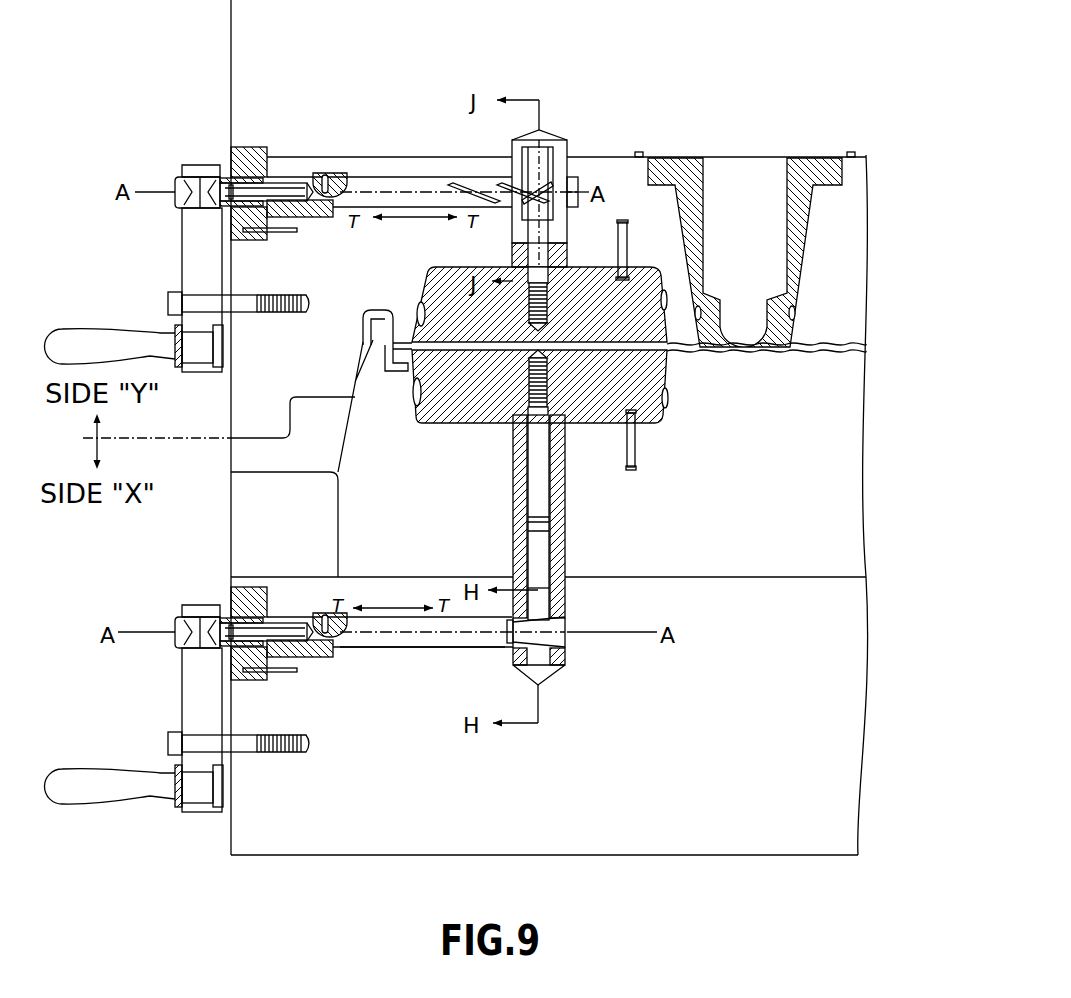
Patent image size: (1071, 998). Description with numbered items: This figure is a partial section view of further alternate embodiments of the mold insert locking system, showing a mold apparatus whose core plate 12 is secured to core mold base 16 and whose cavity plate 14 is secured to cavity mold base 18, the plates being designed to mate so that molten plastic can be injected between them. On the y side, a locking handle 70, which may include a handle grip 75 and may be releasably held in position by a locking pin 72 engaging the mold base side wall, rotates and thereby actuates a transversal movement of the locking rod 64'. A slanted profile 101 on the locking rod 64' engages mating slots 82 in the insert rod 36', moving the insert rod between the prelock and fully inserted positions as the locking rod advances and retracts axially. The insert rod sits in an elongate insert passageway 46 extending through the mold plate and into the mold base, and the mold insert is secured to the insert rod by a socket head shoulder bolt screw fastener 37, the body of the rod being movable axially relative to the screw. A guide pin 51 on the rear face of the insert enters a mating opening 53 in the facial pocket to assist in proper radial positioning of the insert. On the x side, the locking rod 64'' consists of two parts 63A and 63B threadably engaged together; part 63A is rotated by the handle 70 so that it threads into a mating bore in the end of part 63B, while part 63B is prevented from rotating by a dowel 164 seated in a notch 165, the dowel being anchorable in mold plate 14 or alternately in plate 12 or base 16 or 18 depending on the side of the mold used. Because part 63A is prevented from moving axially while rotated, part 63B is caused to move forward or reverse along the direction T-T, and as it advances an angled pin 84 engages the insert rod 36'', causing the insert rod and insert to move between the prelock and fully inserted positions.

The core plate 12 is at (330, 482).
The cavity plate 14 is at (258, 385).
The core mold base 16 is at (270, 833).
The cavity mold base 18 is at (242, 32).
The insert rod 36' is at (590, 176).
The insert rod 36'' is at (584, 550).
The socket head shoulder bolt screw fastener 37 is at (547, 155).
The elongate insert passageway 46 is at (510, 153).
The guide pin 51 is at (624, 258).
The mating opening 53 is at (624, 258).
The part of locking rod 63A is at (300, 657).
The part of locking rod 63B is at (388, 640).
The locking rod 64' is at (423, 162).
The locking rod 64'' is at (416, 584).
The locking handle 70 is at (202, 243).
The locking pin 72 is at (163, 300).
The handle grip 75 is at (70, 343).
The mating slots 82 is at (553, 230).
The angled pin 84 is at (553, 627).
The slanted profile 101 is at (463, 187).
The dowel 164 is at (320, 173).
The notch 165 is at (350, 173).